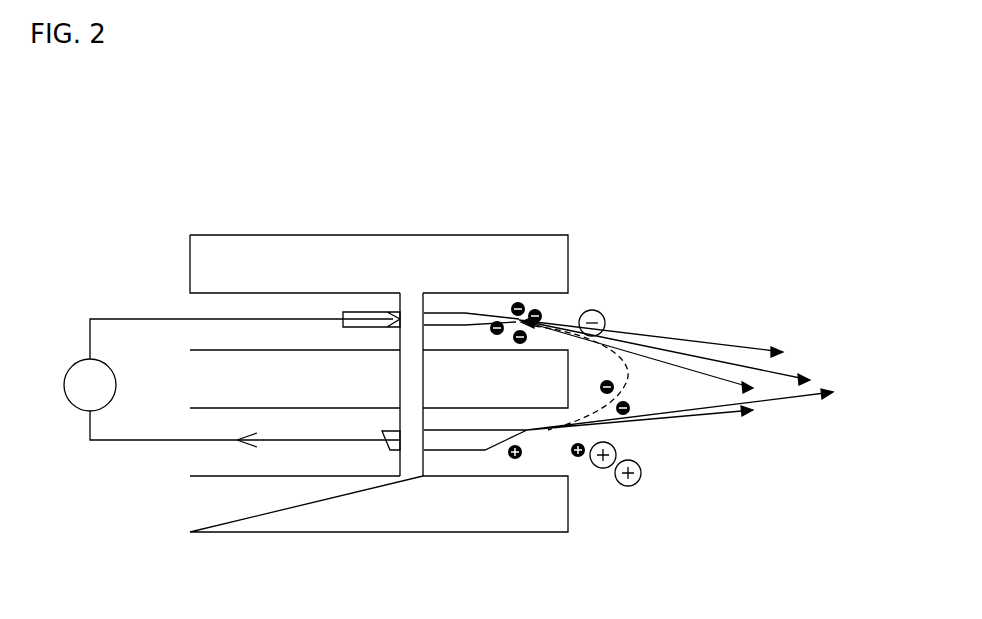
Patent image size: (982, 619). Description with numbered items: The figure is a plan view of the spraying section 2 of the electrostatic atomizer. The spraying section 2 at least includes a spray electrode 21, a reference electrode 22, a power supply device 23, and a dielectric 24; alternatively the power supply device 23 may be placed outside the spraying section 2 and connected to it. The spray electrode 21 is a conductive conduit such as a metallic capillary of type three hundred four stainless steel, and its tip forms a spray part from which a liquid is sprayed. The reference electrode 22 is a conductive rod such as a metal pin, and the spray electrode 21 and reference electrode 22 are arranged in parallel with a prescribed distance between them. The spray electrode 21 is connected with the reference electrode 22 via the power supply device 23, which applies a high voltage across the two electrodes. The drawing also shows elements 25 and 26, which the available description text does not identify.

The spraying section 2 is at (686, 228).
The spray electrode 21 is at (458, 440).
The reference electrode 22 is at (457, 318).
The power supply device 23 is at (80, 363).
The dielectric 24 is at (248, 245).
The lower extraction electrode 25 is at (390, 450).
The upper extraction electrode 26 is at (398, 315).